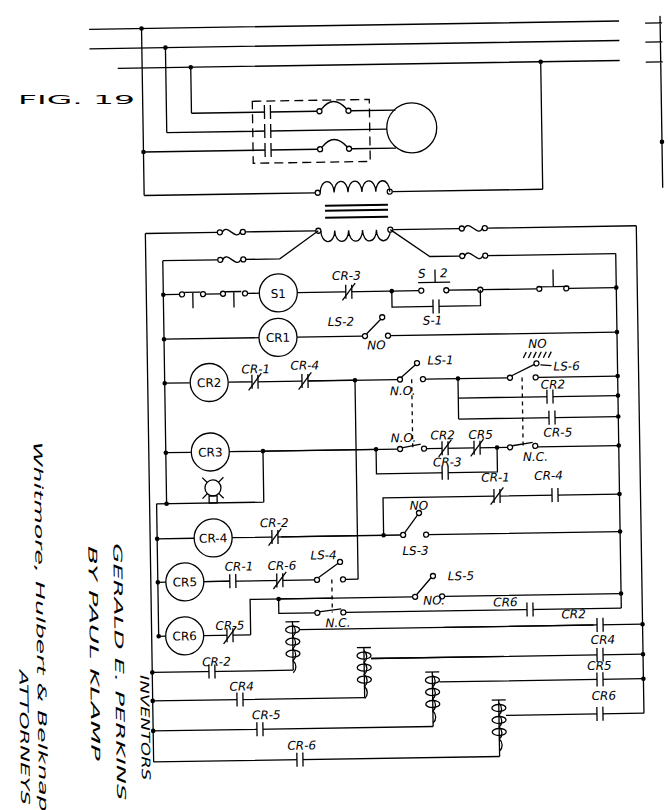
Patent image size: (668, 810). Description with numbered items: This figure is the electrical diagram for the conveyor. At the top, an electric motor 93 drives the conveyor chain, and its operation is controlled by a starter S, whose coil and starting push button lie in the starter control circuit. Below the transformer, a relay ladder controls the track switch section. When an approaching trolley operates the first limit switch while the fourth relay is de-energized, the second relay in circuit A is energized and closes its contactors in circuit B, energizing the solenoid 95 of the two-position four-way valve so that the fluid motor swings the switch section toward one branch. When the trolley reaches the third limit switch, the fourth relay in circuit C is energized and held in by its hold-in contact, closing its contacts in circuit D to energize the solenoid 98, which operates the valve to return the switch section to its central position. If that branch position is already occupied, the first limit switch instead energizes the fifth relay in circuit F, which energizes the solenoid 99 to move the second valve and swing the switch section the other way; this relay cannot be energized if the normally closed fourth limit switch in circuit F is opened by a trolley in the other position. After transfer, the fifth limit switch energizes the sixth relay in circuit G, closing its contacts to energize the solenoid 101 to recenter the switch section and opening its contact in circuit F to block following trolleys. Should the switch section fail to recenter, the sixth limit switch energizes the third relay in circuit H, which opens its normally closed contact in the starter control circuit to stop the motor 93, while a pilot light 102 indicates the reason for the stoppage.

The electric motor 93 is at (441, 128).
The solenoid 95 is at (306, 663).
The solenoid 98 is at (372, 676).
The solenoid 99 is at (441, 715).
The solenoid 101 is at (511, 747).
The pilot light 102 is at (222, 491).
The starter S is at (313, 100).
The circuit A is at (343, 380).
The circuit B is at (523, 625).
The circuit C is at (331, 533).
The circuit D is at (409, 659).
The circuit F is at (226, 586).
The circuit G is at (259, 598).
The circuit H is at (321, 447).